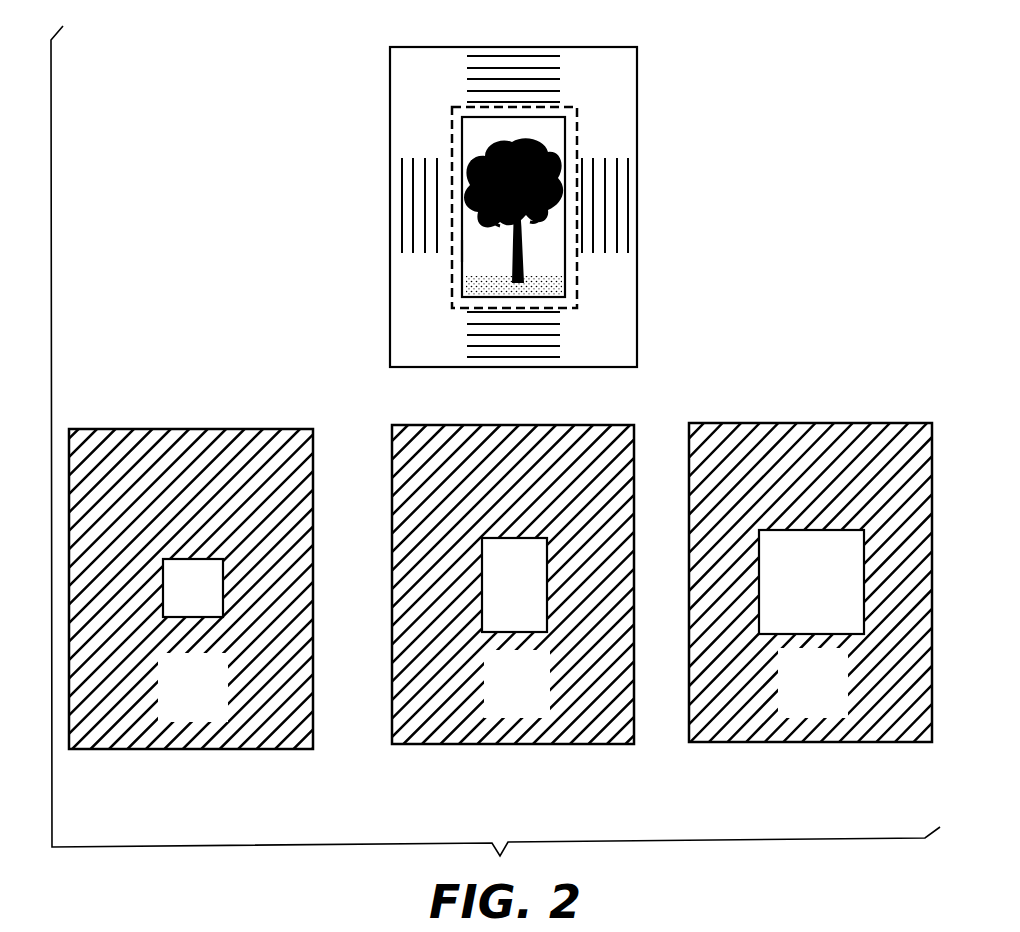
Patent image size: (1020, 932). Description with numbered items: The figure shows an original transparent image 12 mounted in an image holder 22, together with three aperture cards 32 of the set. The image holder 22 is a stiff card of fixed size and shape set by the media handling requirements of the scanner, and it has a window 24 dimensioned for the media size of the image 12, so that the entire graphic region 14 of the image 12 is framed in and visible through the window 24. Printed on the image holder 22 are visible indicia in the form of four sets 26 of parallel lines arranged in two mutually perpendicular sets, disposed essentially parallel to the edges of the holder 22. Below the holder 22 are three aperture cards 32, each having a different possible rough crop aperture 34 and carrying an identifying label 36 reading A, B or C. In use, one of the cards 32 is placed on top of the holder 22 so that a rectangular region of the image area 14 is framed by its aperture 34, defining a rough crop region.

The original image 12 is at (577, 262).
The graphic region 14 is at (550, 135).
The image holder 22 is at (633, 65).
The window 24 is at (462, 250).
The sets of parallel lines 26 is at (463, 56).
The aperture card 32 is at (245, 740).
The rough crop aperture 34 is at (223, 577).
The identifying label 36 is at (165, 680).